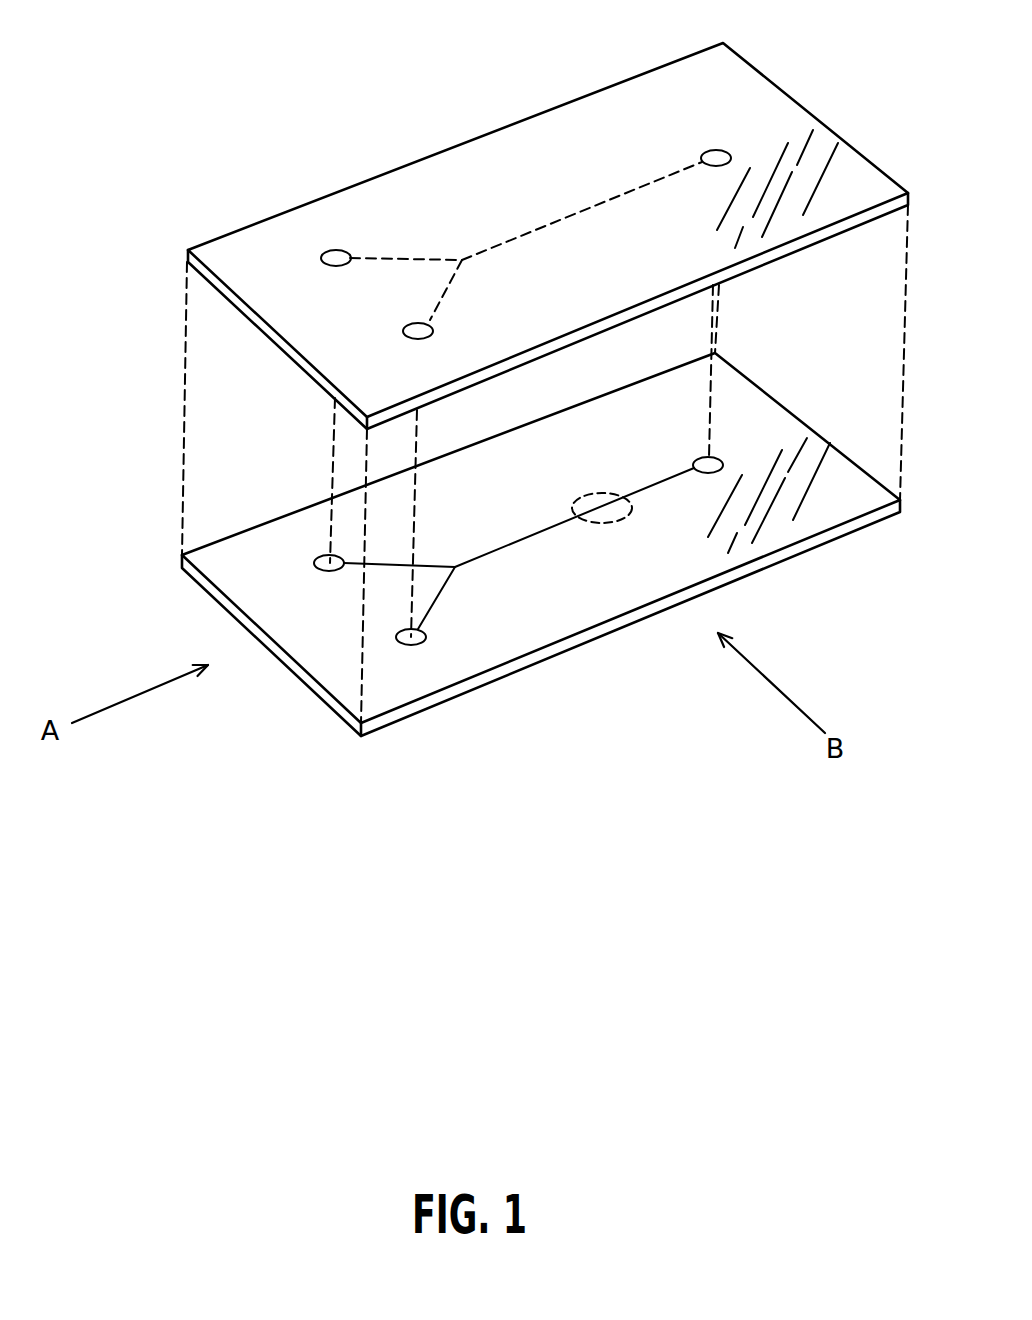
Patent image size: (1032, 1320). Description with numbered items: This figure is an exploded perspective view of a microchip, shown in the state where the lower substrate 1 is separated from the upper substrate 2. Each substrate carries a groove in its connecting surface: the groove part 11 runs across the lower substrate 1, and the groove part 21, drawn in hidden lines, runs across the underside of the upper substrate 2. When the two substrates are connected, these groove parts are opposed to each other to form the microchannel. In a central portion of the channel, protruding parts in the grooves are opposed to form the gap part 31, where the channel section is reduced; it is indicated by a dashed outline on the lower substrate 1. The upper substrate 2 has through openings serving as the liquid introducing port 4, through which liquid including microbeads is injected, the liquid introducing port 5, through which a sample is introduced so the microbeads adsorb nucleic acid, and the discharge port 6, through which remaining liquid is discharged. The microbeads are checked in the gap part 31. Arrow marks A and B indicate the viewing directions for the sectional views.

The lower substrate 1 is at (478, 648).
The upper substrate 2 is at (480, 193).
The liquid introducing port 4 is at (336, 258).
The liquid introducing port 5 is at (404, 330).
The discharge port 6 is at (717, 153).
The groove part 11 is at (485, 553).
The groove part 21 is at (598, 203).
The gap part 31 is at (600, 493).